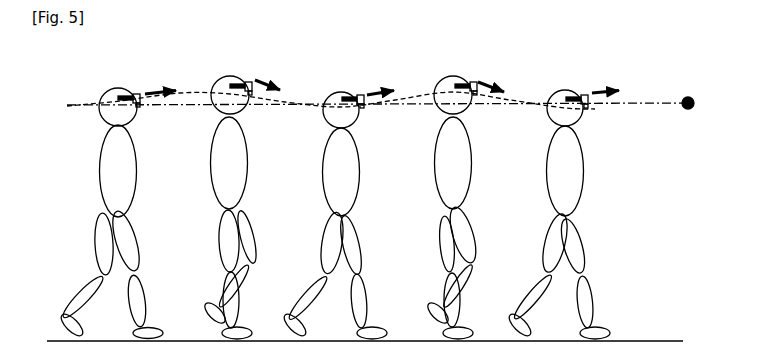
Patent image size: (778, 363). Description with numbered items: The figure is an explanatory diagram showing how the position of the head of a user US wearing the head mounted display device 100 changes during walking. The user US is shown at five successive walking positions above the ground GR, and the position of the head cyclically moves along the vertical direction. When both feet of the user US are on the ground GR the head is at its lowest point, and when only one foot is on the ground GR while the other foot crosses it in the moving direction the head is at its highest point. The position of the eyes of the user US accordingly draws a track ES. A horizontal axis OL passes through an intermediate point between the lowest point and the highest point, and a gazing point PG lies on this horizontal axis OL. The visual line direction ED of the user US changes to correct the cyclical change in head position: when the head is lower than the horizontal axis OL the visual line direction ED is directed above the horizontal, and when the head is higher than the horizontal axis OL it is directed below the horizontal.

The head mounted display device 100 is at (138, 93).
The visual line direction ED is at (152, 92).
The track ES is at (205, 99).
The horizontal axis OL is at (363, 101).
The user US is at (99, 177).
The gazing point PG is at (683, 97).
The ground GR is at (647, 341).